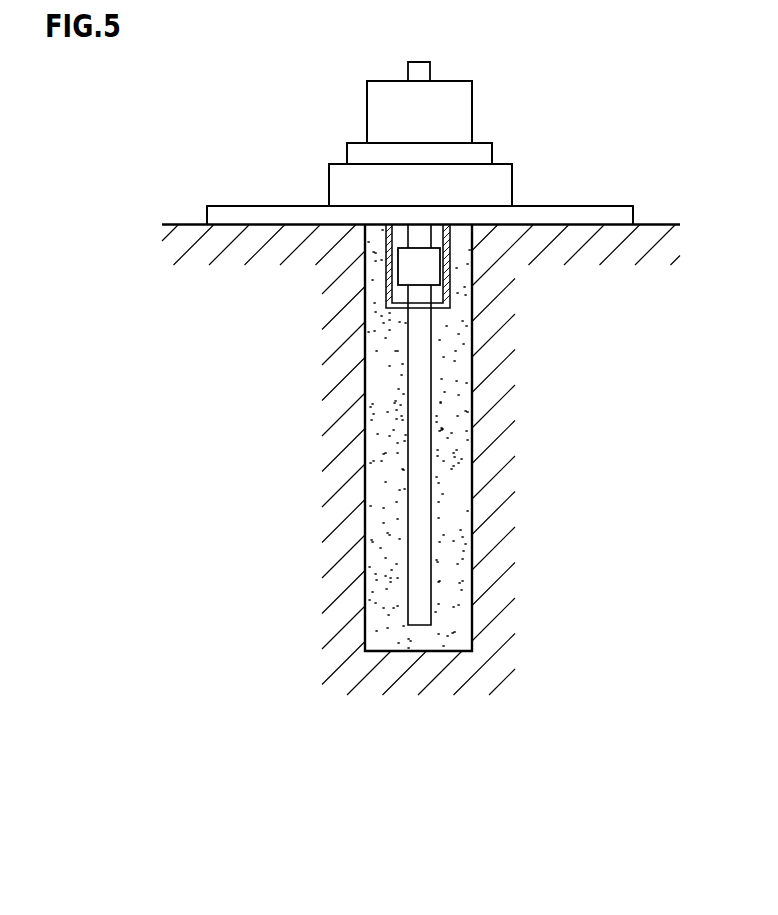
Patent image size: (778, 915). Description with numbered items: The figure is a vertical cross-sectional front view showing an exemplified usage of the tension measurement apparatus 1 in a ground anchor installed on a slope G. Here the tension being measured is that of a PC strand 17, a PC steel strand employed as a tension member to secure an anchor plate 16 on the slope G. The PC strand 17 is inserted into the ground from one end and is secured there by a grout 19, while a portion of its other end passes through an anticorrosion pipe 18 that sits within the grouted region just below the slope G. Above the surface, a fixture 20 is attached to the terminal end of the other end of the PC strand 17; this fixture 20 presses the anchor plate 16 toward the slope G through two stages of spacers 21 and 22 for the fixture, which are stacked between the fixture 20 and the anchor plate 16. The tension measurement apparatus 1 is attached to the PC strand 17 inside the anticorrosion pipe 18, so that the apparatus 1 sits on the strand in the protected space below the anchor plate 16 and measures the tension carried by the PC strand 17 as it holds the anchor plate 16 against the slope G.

The tension measurement apparatus 1 is at (427, 269).
The anchor plate 16 is at (608, 210).
The PC strand 17 is at (422, 402).
The anticorrosion pipe 18 is at (390, 296).
The grout 19 is at (382, 503).
The fixture 20 is at (457, 114).
The spacer 21 is at (358, 152).
The spacer 22 is at (345, 183).
The slope G is at (190, 222).